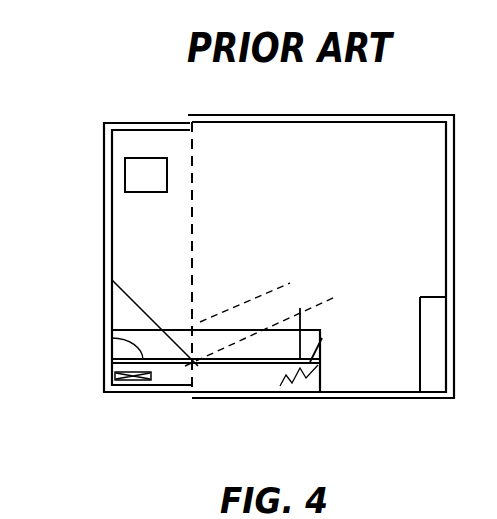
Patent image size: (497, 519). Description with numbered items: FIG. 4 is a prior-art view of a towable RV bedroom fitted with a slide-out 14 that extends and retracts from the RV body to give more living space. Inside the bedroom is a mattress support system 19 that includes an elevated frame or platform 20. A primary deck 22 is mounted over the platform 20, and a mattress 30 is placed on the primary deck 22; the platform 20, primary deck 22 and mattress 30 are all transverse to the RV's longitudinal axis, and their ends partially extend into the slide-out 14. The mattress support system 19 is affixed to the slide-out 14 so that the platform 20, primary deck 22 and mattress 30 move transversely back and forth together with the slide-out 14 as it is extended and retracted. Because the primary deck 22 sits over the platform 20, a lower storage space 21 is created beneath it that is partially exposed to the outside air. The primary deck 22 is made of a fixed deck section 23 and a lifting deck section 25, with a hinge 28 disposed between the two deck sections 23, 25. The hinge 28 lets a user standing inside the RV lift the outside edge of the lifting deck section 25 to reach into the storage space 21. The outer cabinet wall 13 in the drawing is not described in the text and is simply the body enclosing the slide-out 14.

The cabinet housing 13 is at (395, 114).
The slide-out 14 is at (103, 155).
The mattress support system 19 is at (77, 357).
The platform 20 is at (243, 381).
The lower storage space 21 is at (305, 383).
The primary deck 22 is at (322, 338).
The fixed deck section 23 is at (108, 338).
The lifting deck section 25 is at (292, 315).
The hinge 28 is at (110, 279).
The mattress 30 is at (250, 303).